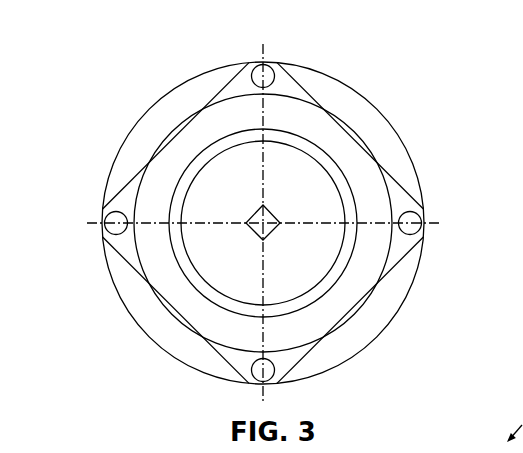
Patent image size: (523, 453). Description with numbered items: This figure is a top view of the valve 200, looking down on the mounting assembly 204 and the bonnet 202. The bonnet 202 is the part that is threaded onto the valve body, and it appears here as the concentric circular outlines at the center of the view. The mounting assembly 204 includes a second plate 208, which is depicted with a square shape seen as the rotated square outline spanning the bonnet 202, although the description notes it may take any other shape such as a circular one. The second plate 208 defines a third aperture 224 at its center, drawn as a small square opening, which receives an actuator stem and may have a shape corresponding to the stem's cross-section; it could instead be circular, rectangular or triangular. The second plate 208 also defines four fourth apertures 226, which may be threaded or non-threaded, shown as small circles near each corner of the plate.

The valve 200 is at (364, 44).
The bonnet 202 is at (405, 118).
The mounting assembly 204 is at (330, 88).
The second plate 208 is at (394, 181).
The third aperture 224 is at (277, 209).
The fourth apertures 226 is at (266, 65).